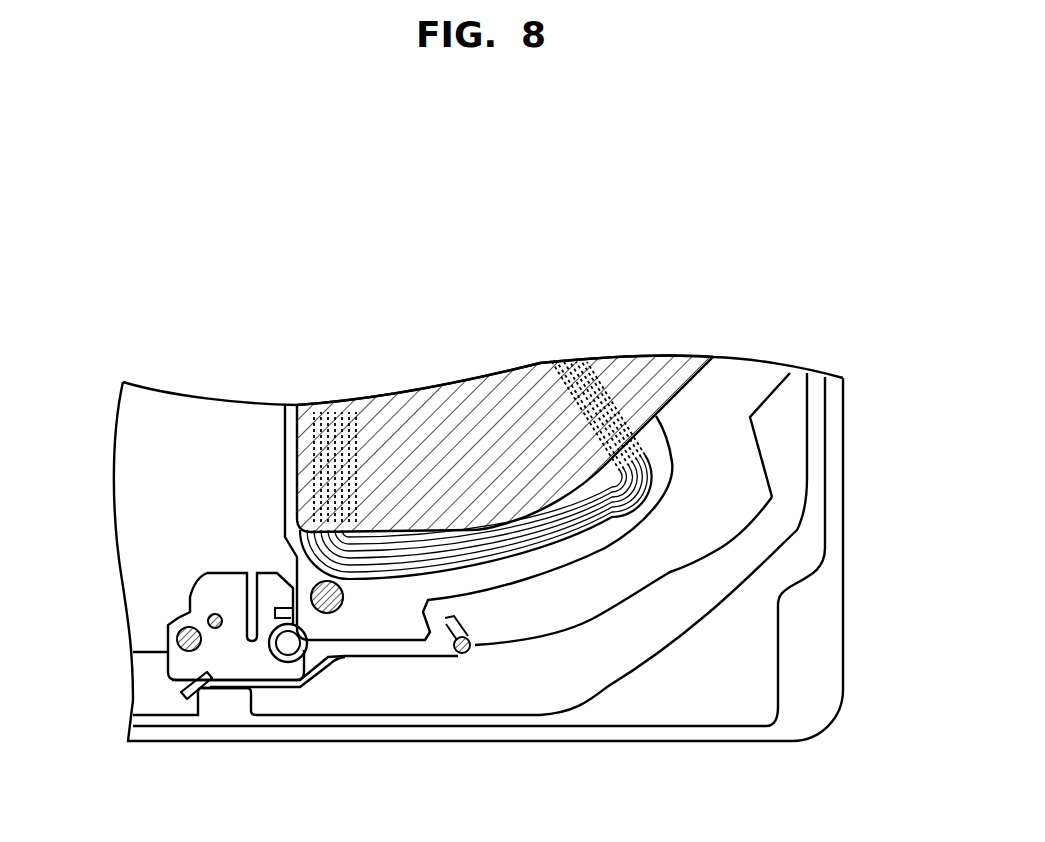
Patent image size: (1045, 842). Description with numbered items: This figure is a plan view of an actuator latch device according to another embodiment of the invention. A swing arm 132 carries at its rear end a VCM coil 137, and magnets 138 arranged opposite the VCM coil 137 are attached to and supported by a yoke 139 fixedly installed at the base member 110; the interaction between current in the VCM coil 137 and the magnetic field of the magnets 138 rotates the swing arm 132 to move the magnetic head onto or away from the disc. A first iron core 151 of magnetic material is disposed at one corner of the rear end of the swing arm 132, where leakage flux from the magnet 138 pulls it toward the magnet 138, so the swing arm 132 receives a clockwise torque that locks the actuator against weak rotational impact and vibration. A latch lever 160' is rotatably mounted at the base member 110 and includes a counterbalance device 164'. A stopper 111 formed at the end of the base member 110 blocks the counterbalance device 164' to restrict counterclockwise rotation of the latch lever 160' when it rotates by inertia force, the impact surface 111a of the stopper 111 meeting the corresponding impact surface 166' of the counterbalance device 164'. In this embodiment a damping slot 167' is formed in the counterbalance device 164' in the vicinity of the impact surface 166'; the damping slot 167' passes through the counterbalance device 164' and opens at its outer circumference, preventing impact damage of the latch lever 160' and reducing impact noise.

The base member 110 is at (843, 662).
The stopper 111 is at (228, 695).
The impact surface 111a is at (203, 695).
The swing arm 132 is at (672, 487).
The VCM coil 137 is at (607, 528).
The magnet 138 is at (658, 370).
The yoke 139 is at (610, 518).
The first iron core 151 is at (338, 582).
The latch lever 160' is at (315, 723).
The counterbalance device 164' is at (232, 587).
The impact surface 166' is at (202, 706).
The damping slot 167' is at (127, 695).